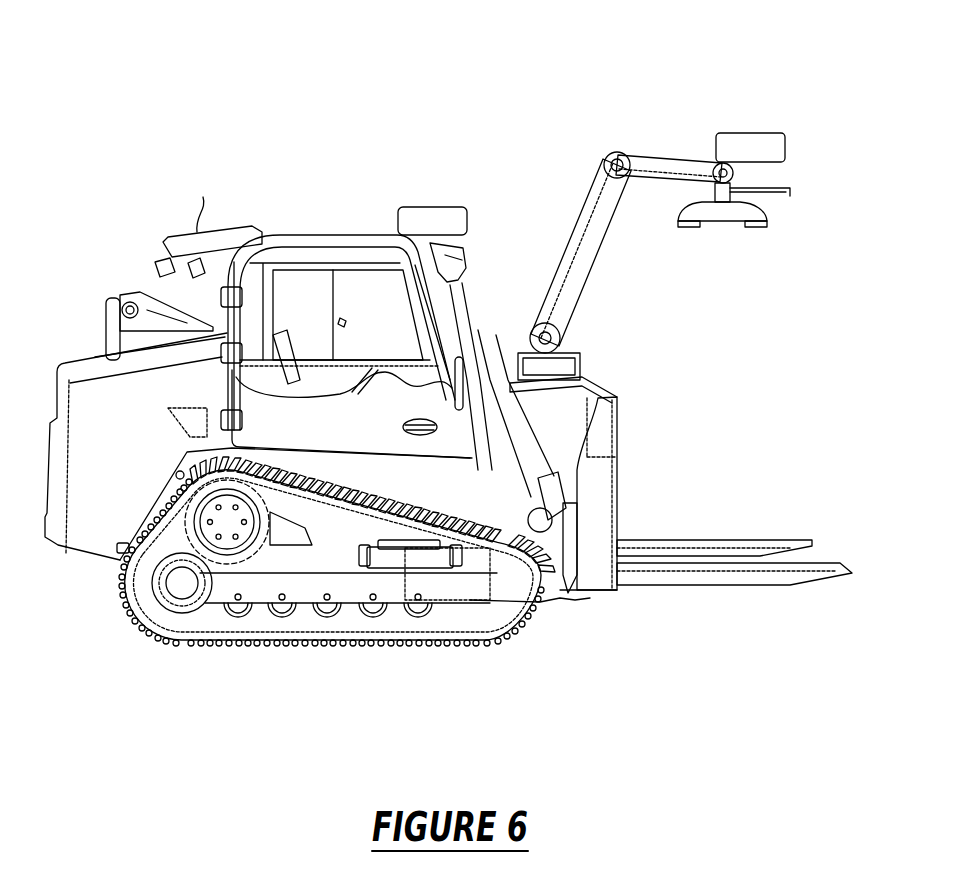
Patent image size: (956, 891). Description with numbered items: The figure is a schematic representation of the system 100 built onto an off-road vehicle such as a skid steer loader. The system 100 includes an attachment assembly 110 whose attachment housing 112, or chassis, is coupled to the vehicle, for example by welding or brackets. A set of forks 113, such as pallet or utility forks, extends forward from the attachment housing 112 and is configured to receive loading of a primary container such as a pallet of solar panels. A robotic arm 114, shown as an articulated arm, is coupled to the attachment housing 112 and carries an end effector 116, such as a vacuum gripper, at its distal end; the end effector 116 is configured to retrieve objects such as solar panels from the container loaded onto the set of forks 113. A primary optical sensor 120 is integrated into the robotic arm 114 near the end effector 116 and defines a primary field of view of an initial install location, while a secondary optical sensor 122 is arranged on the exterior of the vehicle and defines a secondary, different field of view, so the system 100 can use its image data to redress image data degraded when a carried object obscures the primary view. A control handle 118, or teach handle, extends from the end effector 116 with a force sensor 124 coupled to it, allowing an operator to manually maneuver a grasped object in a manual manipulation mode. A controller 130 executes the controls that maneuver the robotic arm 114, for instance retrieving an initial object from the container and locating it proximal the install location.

The system 100 is at (226, 68).
The attachment assembly 110 is at (598, 378).
The attachment housing 112 is at (606, 590).
The set of forks 113 is at (691, 539).
The robotic arm 114 is at (591, 197).
The end effector 116 is at (720, 226).
The control handle 118 is at (787, 196).
The primary optical sensor 120 is at (732, 133).
The secondary optical sensor 122 is at (437, 206).
The force sensor 124 is at (713, 187).
The controller 130 is at (518, 352).